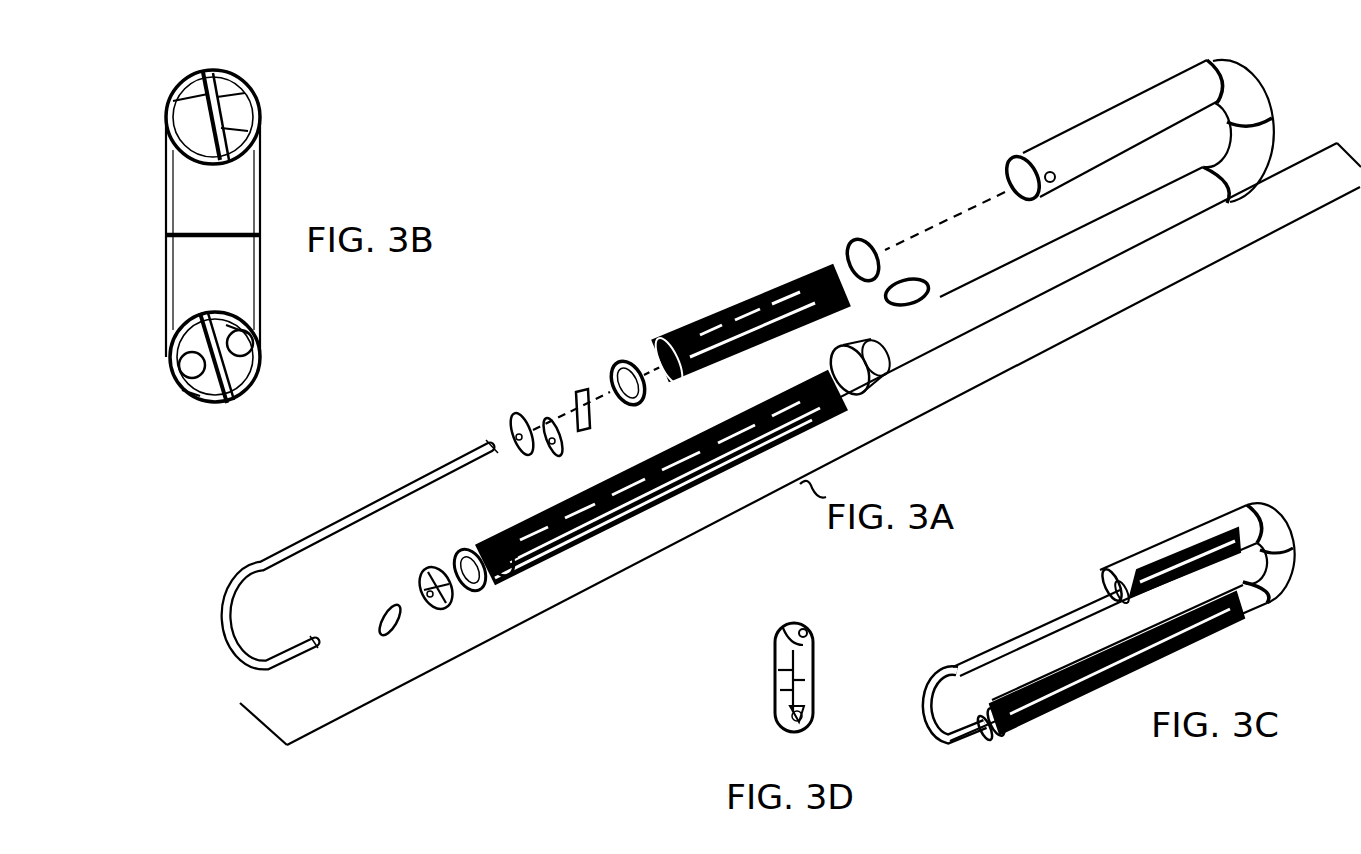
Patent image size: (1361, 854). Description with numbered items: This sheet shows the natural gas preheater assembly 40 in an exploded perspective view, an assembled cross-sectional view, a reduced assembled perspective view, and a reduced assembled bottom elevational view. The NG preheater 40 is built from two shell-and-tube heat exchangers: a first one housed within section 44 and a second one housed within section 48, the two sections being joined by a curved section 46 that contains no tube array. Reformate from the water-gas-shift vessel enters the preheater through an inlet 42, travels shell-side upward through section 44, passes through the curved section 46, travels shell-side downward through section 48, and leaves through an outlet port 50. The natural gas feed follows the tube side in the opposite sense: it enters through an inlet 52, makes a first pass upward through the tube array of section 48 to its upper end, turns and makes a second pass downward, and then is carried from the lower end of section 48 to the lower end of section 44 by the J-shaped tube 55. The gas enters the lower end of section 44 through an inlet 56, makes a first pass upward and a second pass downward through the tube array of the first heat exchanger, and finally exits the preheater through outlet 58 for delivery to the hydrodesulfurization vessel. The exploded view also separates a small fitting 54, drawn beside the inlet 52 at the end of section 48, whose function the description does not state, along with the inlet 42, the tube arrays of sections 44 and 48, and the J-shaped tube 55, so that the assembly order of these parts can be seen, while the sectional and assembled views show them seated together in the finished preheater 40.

In FIG. 3B, the natural gas preheater assembly 40 is at (250, 236).
In FIG. 3A, the natural gas preheater assembly 40 is at (743, 398).
In FIG. 3C, the natural gas preheater assembly 40 is at (1124, 605).
In FIG. 3D, the natural gas preheater assembly 40 is at (745, 660).
In FIG. 3A, the inlet 42 is at (885, 365).
In FIG. 3A, the section 44 is at (960, 368).
In FIG. 3C, the section 44 is at (1190, 660).
In FIG. 3B, the curved section 46 is at (210, 194).
In FIG. 3A, the curved section 46 is at (1252, 84).
In FIG. 3C, the curved section 46 is at (1294, 545).
In FIG. 3A, the section 48 is at (836, 205).
In FIG. 3C, the section 48 is at (1163, 526).
In FIG. 3A, the outlet port 50 is at (1048, 172).
In FIG. 3A, the inlet 52 is at (563, 432).
In FIG. 3C, the inlet 52 is at (1112, 603).
In FIG. 3A, the washer 54 is at (510, 432).
In FIG. 3C, the washer 54 is at (1113, 593).
In FIG. 3A, the tube 55 is at (223, 640).
In FIG. 3C, the tube 55 is at (935, 690).
In FIG. 3A, the inlet 56 is at (434, 600).
In FIG. 3C, the inlet 56 is at (963, 745).
In FIG. 3A, the outlet 58 is at (470, 590).
In FIG. 3C, the outlet 58 is at (1006, 737).